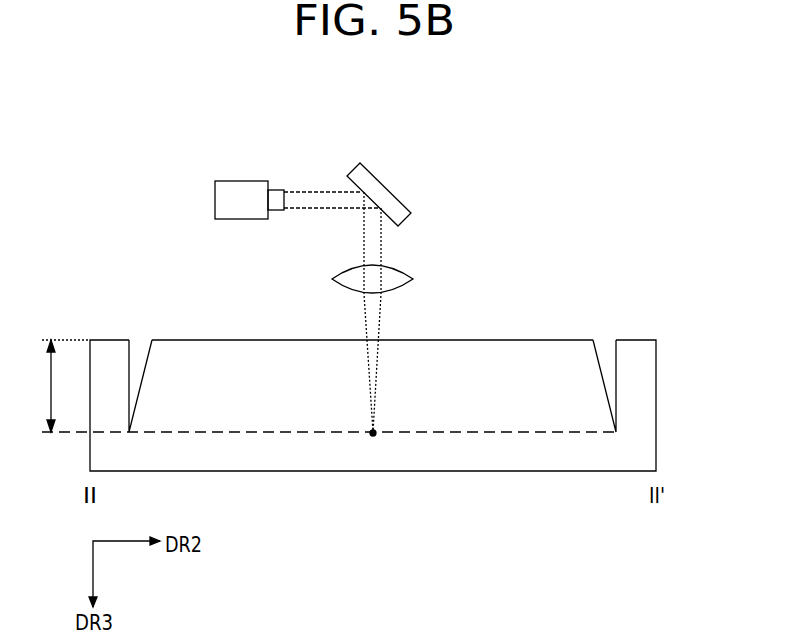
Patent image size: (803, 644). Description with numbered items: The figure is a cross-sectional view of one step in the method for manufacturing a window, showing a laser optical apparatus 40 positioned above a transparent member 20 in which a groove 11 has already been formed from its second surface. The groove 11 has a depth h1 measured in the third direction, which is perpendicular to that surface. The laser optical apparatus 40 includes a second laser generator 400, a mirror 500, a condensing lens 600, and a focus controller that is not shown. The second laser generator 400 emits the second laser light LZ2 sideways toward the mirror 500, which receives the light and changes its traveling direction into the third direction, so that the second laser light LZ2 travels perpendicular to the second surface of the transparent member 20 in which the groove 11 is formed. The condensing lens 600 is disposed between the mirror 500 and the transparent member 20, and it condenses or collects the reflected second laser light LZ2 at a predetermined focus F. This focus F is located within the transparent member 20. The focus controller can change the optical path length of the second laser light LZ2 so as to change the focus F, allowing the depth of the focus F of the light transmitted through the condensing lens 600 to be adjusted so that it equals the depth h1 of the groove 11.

The second laser generator 400 is at (251, 192).
The mirror 500 is at (400, 212).
The condensing lens 600 is at (402, 279).
The laser optical apparatus 40 is at (497, 145).
The transparent member 20 is at (642, 407).
The groove 11 is at (141, 343).
The second laser light LZ2 is at (364, 245).
The focus F is at (373, 436).
The depth of the groove h1 is at (36, 386).